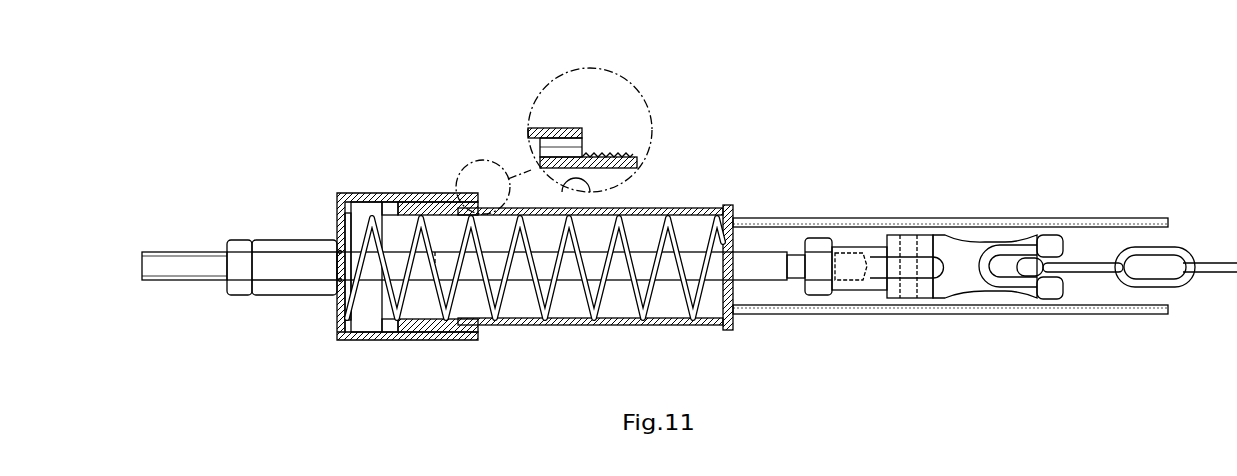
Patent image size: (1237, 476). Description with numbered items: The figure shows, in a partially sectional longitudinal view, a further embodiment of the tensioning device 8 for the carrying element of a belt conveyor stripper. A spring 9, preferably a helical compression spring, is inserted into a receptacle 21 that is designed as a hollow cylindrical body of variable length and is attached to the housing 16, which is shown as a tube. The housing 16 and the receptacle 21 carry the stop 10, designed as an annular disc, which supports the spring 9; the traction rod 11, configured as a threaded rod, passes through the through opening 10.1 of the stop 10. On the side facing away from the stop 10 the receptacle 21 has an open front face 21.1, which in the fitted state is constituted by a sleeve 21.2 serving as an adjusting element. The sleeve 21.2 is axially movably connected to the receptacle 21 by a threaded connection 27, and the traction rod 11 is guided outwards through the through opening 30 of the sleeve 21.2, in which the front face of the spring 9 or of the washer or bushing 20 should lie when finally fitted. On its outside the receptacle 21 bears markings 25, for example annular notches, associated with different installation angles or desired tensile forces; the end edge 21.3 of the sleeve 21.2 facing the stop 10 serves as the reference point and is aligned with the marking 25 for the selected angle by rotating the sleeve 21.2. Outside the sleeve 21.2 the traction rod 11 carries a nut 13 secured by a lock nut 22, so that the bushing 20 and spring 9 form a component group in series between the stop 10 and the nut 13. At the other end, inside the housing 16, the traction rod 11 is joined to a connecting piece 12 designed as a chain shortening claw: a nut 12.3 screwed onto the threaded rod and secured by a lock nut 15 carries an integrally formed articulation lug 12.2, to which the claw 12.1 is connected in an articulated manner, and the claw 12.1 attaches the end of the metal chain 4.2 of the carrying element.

The metal chain 4.2 is at (1189, 247).
The tensioning device 8 is at (681, 158).
The spring 9 is at (587, 312).
The stop 10 is at (725, 206).
The through opening 10.1 is at (733, 250).
The traction rod 11 is at (771, 272).
The connecting piece 12 is at (967, 250).
The claw 12.1 is at (1047, 290).
The articulation lug 12.2 is at (924, 270).
The nut 12.3 is at (858, 246).
The nut 13 is at (283, 243).
The lock nut 15 is at (817, 290).
The housing 16 is at (1132, 221).
The bushing 20 is at (340, 230).
The receptacle 21 is at (501, 332).
The front face 21.1 is at (337, 329).
The sleeve 21.2 is at (390, 195).
The end edge 21.3 is at (490, 167).
The lock nut 22 is at (238, 243).
The markings 25 is at (626, 156).
The threaded connection 27 is at (440, 333).
The through opening of the sleeve 30 is at (343, 311).